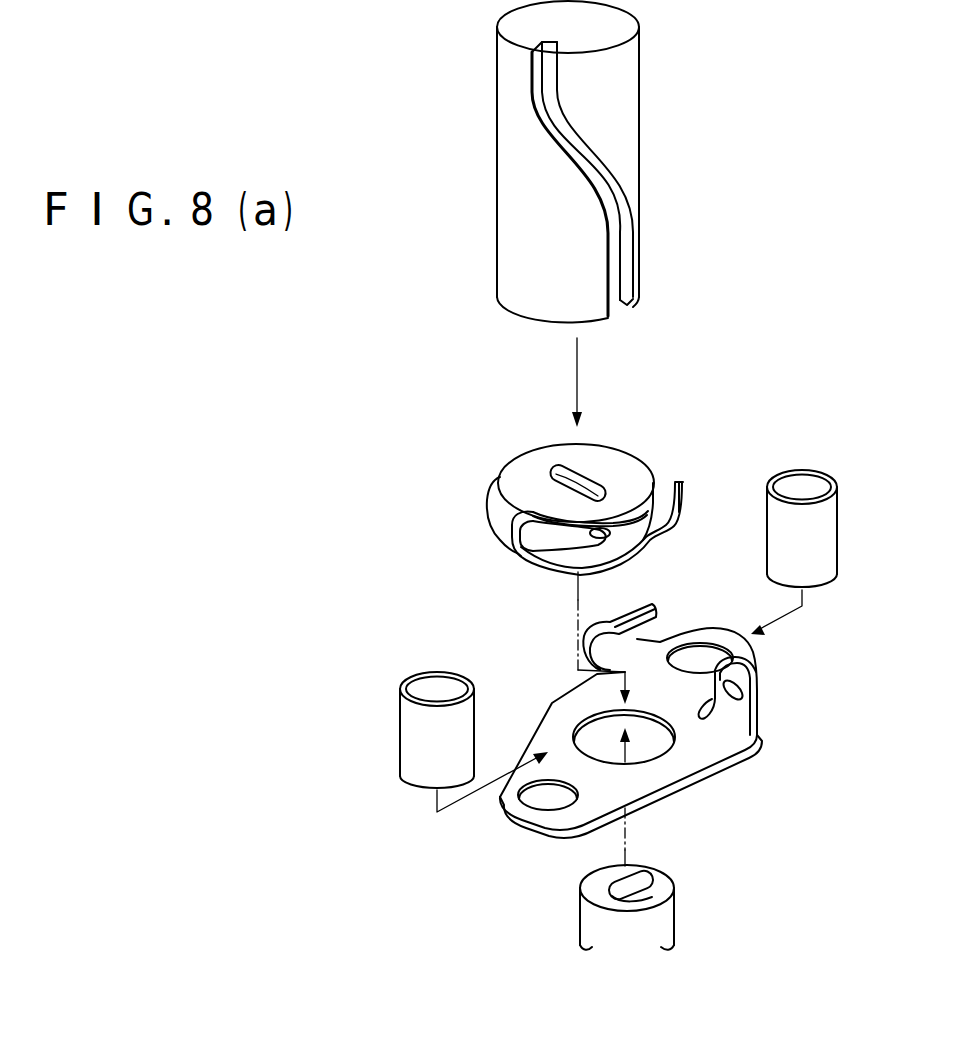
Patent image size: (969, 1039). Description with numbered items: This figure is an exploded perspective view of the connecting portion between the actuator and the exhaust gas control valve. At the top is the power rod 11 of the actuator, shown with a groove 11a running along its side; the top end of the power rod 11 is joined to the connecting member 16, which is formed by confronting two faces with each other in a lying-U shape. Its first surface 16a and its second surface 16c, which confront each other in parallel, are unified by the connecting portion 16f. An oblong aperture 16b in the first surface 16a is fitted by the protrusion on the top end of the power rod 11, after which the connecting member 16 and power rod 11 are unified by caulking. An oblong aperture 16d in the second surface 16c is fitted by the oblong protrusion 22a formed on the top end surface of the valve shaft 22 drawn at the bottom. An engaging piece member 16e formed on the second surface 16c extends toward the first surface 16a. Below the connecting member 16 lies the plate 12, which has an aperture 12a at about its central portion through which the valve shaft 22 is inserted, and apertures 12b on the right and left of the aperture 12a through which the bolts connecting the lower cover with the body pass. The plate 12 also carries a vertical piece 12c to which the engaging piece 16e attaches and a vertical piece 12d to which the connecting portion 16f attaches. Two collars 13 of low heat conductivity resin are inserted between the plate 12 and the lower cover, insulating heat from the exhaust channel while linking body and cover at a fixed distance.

The power rod 11 is at (630, 153).
The helical groove 11a is at (613, 257).
The plate 12 is at (644, 711).
The aperture 12a is at (657, 750).
The apertures 12b is at (540, 800).
The vertical piece 12c is at (733, 727).
The vertical piece 12d is at (633, 607).
The collar 13 is at (413, 740).
The connecting member 16 is at (563, 490).
The first surface 16a is at (608, 460).
The oblong aperture 16b is at (558, 467).
The second surface 16c is at (630, 540).
The oblong aperture 16d is at (587, 533).
The engaging piece member 16e is at (680, 482).
The connecting portion 16f is at (497, 523).
The valve shaft 22 is at (677, 907).
The oblong protrusion 22a is at (643, 883).